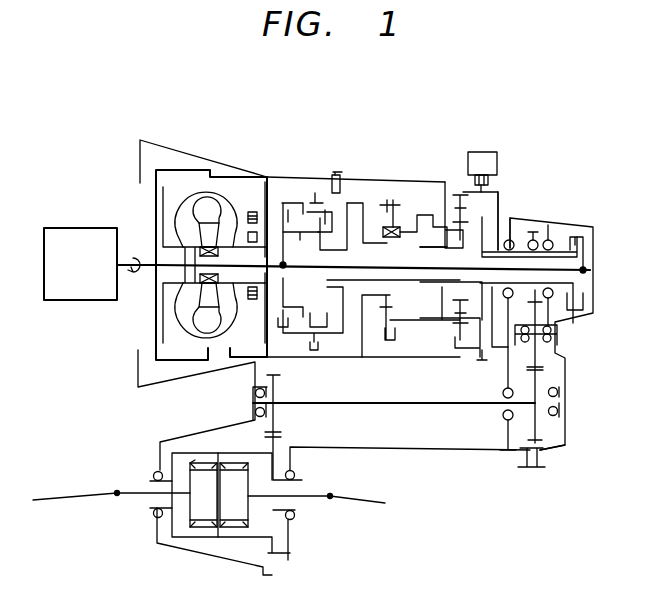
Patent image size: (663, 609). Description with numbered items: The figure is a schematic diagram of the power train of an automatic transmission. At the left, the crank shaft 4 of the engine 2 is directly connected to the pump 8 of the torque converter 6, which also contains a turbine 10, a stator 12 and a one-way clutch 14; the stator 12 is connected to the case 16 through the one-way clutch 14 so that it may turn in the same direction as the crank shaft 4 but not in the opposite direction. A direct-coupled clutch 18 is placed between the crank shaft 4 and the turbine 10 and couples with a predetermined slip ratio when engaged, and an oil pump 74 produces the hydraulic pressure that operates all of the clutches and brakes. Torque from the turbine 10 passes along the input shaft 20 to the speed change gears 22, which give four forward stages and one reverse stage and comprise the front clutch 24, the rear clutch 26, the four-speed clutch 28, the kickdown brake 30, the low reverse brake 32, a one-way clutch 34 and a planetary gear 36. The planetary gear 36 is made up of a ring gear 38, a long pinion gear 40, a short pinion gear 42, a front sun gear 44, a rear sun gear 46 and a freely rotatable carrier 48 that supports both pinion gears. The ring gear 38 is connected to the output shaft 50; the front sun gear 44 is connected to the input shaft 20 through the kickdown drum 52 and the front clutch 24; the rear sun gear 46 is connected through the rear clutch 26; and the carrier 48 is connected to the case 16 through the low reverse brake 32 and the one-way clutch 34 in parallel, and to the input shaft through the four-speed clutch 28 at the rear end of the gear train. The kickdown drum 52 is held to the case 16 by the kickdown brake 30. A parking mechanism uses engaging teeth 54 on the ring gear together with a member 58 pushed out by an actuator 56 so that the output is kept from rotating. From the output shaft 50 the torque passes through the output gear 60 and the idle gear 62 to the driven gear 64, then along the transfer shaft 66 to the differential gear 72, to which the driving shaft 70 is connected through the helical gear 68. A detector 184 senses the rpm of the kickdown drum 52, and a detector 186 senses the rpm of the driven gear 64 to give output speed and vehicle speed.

The engine 2 is at (61, 228).
The crank shaft 4 is at (140, 262).
The torque converter 6 is at (192, 367).
The pump 8 is at (230, 342).
The turbine 10 is at (183, 348).
The stator 12 is at (197, 303).
The one-way clutch 14 is at (262, 273).
The case 16 is at (268, 337).
The direct-coupled clutch 18 is at (157, 200).
The input shaft 20 is at (195, 284).
The speed change gears 22 is at (402, 157).
The front clutch 24 is at (287, 178).
The rear clutch 26 is at (327, 177).
The four-speed clutch 28 is at (583, 245).
The kickdown brake 30 is at (303, 177).
The low reverse brake 32 is at (403, 178).
The one-way clutch 34 is at (393, 227).
The planetary gear 36 is at (427, 338).
The ring gear 38 is at (448, 355).
The long pinion gear 40 is at (453, 178).
The short pinion gear 42 is at (455, 333).
The front sun gear 44 is at (446, 182).
The rear sun gear 46 is at (470, 230).
The carrier 48 is at (507, 177).
The output shaft 50 is at (548, 240).
The kickdown drum 52 is at (355, 178).
The engaging teeth 54 is at (479, 356).
The actuator 56 is at (485, 150).
The member 58 is at (482, 172).
The output gear 60 is at (533, 237).
The idle gear 62 is at (535, 350).
The driven gear 64 is at (540, 433).
The transfer shaft 66 is at (405, 407).
The helical gear 68 is at (275, 413).
The driving shaft 70 is at (82, 496).
The differential gear 72 is at (205, 537).
The oil pump 74 is at (250, 212).
The detector 184 is at (340, 170).
The detector 186 is at (545, 458).